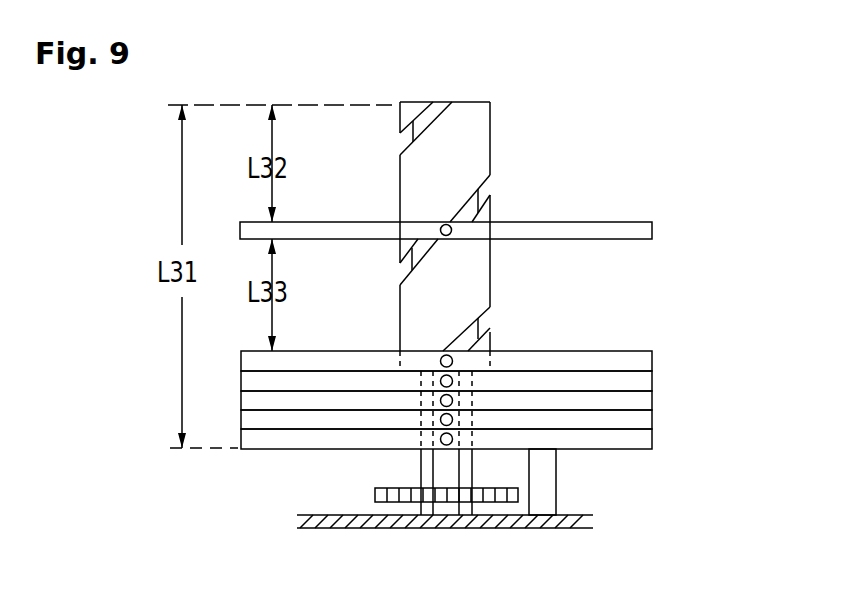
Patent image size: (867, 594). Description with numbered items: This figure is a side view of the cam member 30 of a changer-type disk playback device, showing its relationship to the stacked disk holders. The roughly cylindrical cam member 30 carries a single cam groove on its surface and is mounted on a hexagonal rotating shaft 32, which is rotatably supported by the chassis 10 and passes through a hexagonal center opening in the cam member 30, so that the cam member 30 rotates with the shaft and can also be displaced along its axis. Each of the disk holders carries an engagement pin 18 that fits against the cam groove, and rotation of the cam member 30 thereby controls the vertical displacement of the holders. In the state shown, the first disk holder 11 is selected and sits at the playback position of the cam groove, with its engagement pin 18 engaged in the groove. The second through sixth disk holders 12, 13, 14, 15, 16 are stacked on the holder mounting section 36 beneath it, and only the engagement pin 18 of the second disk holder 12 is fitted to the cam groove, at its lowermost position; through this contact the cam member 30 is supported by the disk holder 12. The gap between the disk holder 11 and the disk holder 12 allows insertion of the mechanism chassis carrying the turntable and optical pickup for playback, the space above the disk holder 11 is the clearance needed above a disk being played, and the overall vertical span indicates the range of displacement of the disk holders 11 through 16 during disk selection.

The cam member 30 is at (479, 221).
The engagement pin 18 is at (394, 205).
The first disk holder 11 is at (490, 200).
The second disk holder 12 is at (491, 329).
The third disk holder 13 is at (491, 365).
The fourth disk holder 14 is at (491, 393).
The fifth disk holder 15 is at (491, 426).
The sixth disk holder 16 is at (491, 453).
The rotating shaft 32 is at (419, 530).
The holder mounting section 36 is at (604, 482).
The chassis 10 is at (447, 549).